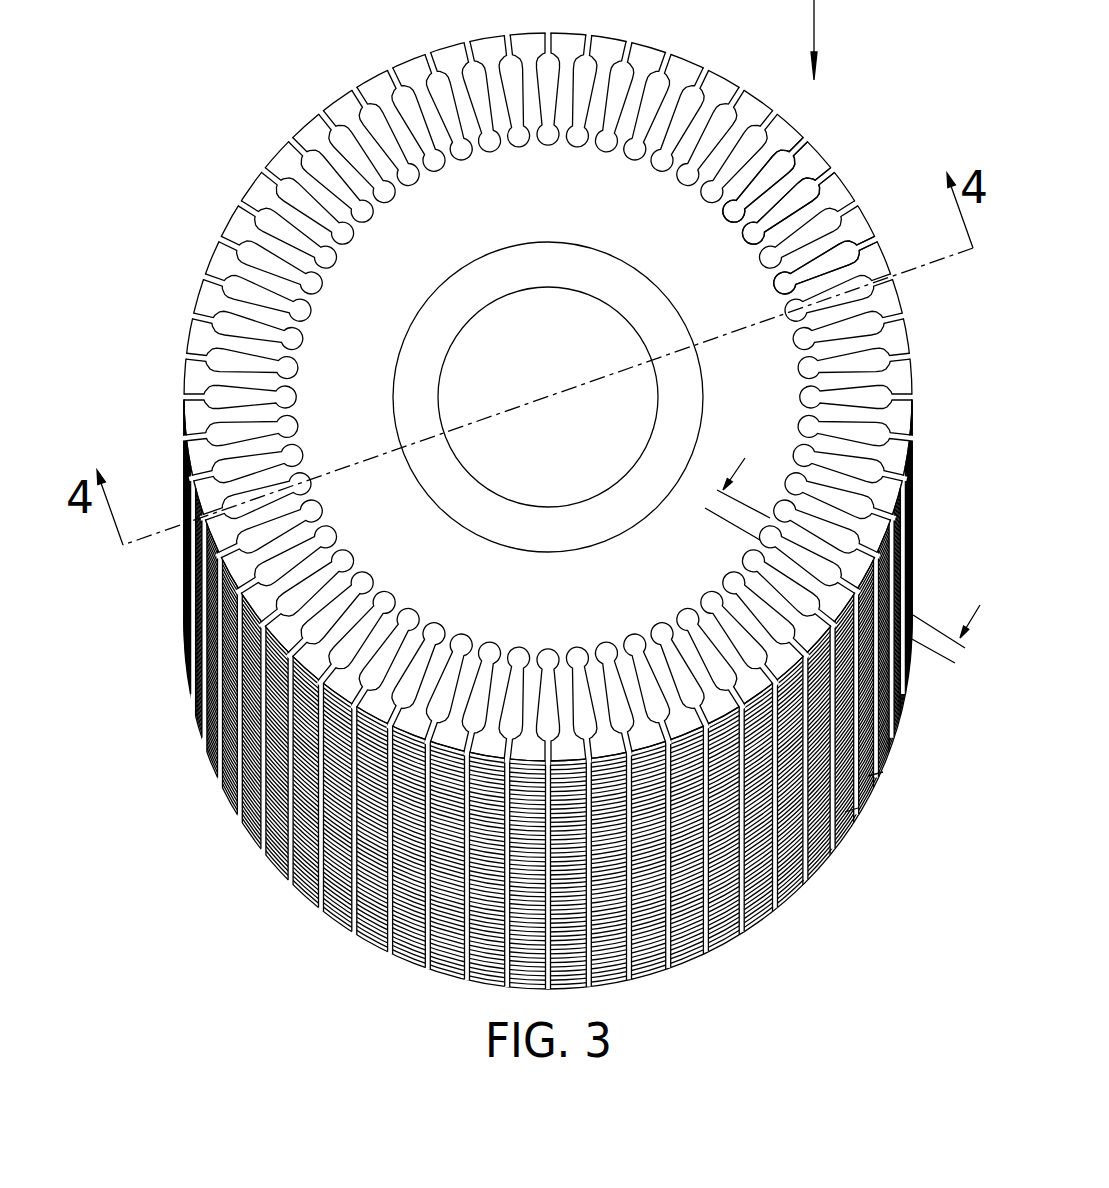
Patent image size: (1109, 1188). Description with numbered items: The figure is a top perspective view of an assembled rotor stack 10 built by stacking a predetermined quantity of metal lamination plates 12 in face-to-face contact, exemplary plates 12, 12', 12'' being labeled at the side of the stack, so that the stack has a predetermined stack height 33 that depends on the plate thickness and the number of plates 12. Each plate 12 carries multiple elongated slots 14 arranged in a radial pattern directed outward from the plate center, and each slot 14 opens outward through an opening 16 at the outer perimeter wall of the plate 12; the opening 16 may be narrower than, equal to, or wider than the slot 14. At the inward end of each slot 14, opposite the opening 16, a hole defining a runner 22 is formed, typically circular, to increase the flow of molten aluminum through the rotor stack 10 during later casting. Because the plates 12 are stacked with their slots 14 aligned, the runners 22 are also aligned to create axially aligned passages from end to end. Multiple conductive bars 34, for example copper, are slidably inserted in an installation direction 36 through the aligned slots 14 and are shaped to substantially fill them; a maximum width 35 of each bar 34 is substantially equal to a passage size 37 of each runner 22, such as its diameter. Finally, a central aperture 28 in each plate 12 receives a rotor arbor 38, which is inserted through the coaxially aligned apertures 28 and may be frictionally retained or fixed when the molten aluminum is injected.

The rotor stack 10 is at (904, 106).
The metal lamination plate 12 is at (548, 395).
The metal lamination plate 12' is at (901, 770).
The metal lamination plate 12'' is at (886, 807).
The slot 14 is at (838, 232).
The opening 16 is at (833, 230).
The runner 22 is at (760, 227).
The central aperture 28 is at (643, 447).
The stack height 33 is at (177, 399).
The bar 34 is at (782, 162).
The maximum width 35 is at (939, 673).
The installation direction 36 is at (832, 40).
The passage size 37 is at (706, 523).
The rotor arbor 38 is at (628, 503).